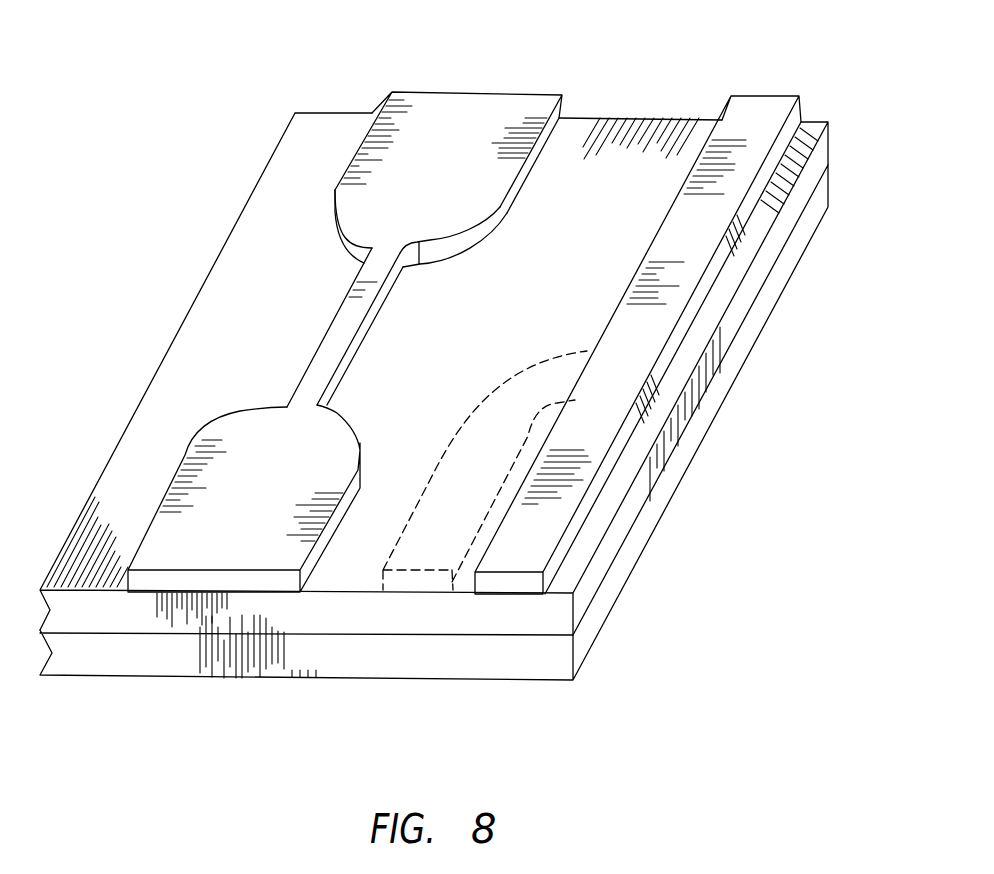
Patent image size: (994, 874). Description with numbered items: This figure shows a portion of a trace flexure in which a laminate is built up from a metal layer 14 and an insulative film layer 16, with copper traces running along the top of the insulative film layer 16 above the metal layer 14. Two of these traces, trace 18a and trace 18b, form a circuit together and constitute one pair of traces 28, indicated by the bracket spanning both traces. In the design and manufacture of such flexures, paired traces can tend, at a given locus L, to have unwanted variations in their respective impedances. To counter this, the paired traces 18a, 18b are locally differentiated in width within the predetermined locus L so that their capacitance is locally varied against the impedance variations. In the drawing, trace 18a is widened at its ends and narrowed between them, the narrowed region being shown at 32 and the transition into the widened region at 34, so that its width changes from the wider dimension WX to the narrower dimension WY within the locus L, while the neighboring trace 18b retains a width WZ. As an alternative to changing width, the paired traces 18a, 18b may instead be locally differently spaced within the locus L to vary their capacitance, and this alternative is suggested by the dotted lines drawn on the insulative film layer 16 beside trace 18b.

The metal layer 14 is at (597, 613).
The insulative film layer 16 is at (627, 518).
The trace 18a is at (397, 108).
The trace 18b is at (752, 112).
The pair of traces 28 is at (803, 65).
The locally differentiated width portion 32 is at (338, 362).
The locally differentiated width portion 34 is at (447, 217).
The locus L is at (234, 256).
The trace width WX is at (547, 160).
The trace width WY is at (375, 328).
The trace width WZ is at (685, 328).